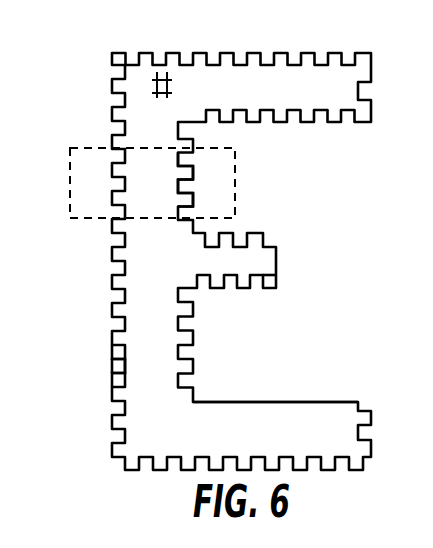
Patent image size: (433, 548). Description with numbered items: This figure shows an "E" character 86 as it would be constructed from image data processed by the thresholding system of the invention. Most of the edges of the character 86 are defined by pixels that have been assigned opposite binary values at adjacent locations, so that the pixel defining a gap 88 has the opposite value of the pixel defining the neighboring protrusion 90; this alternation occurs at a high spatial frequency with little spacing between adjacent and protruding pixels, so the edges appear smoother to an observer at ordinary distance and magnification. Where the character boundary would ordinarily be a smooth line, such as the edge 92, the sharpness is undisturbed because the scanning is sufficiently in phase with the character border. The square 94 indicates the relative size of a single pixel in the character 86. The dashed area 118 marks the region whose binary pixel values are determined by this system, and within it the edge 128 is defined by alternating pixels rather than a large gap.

The character 86 is at (104, 113).
The gap 88 is at (117, 352).
The protrusion 90 is at (115, 360).
The edge 92 is at (238, 400).
The square 94 is at (173, 91).
The area 118 is at (70, 195).
The edge 128 is at (206, 189).